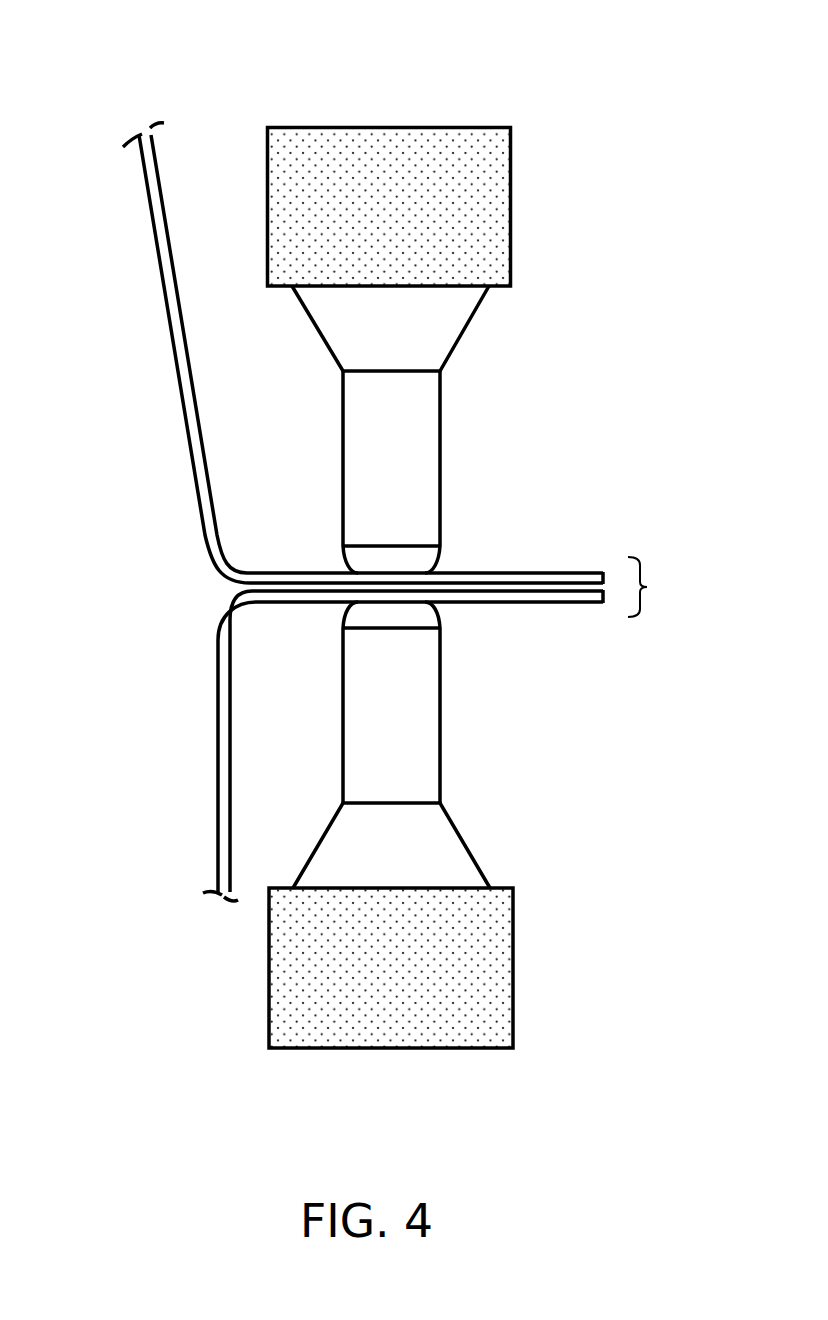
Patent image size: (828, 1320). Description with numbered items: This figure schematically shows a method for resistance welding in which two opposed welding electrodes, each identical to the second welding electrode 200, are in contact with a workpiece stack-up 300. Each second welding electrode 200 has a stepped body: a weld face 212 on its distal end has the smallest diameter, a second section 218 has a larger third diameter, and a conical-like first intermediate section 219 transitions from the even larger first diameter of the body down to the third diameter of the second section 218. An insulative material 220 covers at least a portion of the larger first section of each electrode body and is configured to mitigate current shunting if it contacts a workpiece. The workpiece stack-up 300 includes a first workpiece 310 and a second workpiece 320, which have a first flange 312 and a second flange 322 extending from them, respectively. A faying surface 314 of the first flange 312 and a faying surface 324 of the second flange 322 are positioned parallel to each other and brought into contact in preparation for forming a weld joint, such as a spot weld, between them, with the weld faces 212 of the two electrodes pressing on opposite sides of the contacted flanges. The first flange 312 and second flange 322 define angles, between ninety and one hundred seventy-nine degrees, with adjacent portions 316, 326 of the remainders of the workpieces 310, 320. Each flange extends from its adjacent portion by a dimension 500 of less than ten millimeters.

The flange extension dimension 500 is at (600, 565).
The second welding electrode 200 is at (432, 588).
The weld face 212 is at (395, 572).
The second section 218 is at (441, 477).
The first intermediate section 219 is at (468, 327).
The insulative material 220 is at (510, 188).
The workpiece stack-up 300 is at (371, 512).
The first workpiece 310 is at (344, 353).
The first flange 312 is at (497, 573).
The faying surface of the first flange 314 is at (558, 583).
The adjacent portion of the first workpiece 316 is at (170, 333).
The second workpiece 320 is at (399, 745).
The second flange 322 is at (498, 601).
The faying surface of the second flange 324 is at (578, 603).
The adjacent portion of the second workpiece 326 is at (217, 705).